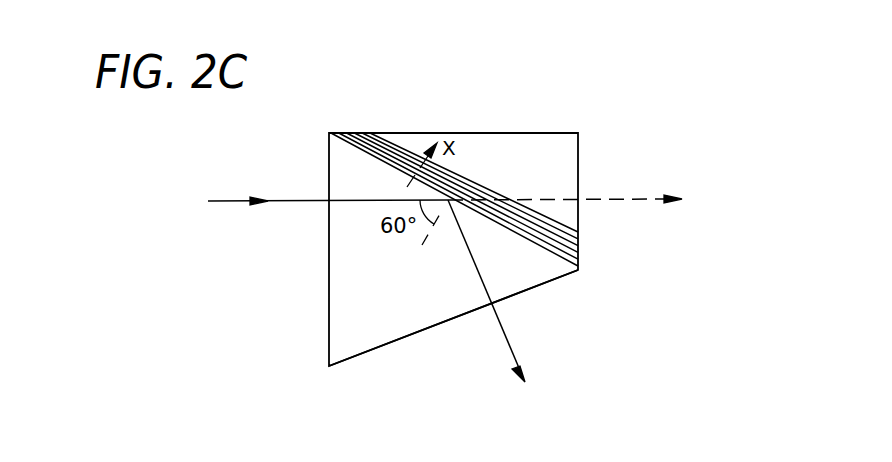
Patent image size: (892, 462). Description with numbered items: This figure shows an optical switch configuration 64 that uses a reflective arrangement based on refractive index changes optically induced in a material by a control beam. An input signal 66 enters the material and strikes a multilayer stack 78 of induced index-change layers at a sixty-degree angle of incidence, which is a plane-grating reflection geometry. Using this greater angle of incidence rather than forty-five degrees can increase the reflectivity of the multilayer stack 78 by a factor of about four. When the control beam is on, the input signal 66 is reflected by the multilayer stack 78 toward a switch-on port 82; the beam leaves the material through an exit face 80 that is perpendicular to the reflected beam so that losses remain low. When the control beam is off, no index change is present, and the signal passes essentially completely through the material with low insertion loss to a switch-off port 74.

The switch configuration 64 is at (566, 80).
The input signal 66 is at (298, 199).
The switch-off port 74 is at (598, 200).
The multilayer stack 78 is at (533, 258).
The exit face 80 is at (420, 335).
The switch-on port 82 is at (500, 328).